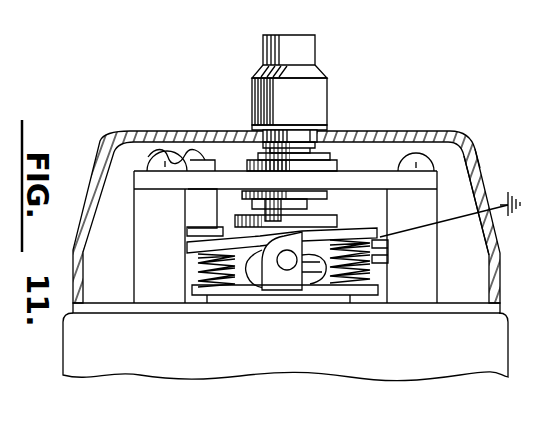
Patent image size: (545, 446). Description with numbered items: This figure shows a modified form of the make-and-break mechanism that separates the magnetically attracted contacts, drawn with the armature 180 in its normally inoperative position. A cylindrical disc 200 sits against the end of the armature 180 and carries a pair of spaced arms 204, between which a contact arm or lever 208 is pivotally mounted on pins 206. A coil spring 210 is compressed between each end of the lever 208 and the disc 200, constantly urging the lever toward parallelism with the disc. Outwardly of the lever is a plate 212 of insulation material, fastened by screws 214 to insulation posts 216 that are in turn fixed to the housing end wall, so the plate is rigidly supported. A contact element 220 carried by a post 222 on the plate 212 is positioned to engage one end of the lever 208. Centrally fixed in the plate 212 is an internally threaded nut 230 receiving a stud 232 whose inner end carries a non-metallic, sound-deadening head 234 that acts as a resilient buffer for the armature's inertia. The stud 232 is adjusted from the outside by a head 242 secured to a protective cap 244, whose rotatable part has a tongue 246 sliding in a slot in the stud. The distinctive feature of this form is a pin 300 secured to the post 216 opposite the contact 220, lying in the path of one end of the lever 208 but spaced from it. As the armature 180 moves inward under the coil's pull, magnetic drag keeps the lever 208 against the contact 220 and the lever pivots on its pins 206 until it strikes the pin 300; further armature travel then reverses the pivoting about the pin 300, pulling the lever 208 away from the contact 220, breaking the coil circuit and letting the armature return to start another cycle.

The armature 180 is at (340, 272).
The cylindrical disc 200 is at (228, 288).
The spaced arms 204 is at (296, 285).
The pins 206 is at (287, 262).
The contact arm or lever 208 is at (345, 224).
The coil spring 210 is at (198, 262).
The plate 212 is at (372, 131).
The screws 214 is at (490, 238).
The posts 216 is at (133, 242).
The contact element 220 is at (187, 236).
The post 222 is at (192, 220).
The internally threaded nut 230 is at (258, 148).
The stud 232 is at (264, 136).
The head or disc 234 is at (316, 270).
The head 242 is at (300, 104).
The cap 244 is at (448, 131).
The tongue 246 is at (286, 128).
The pin 300 is at (388, 256).